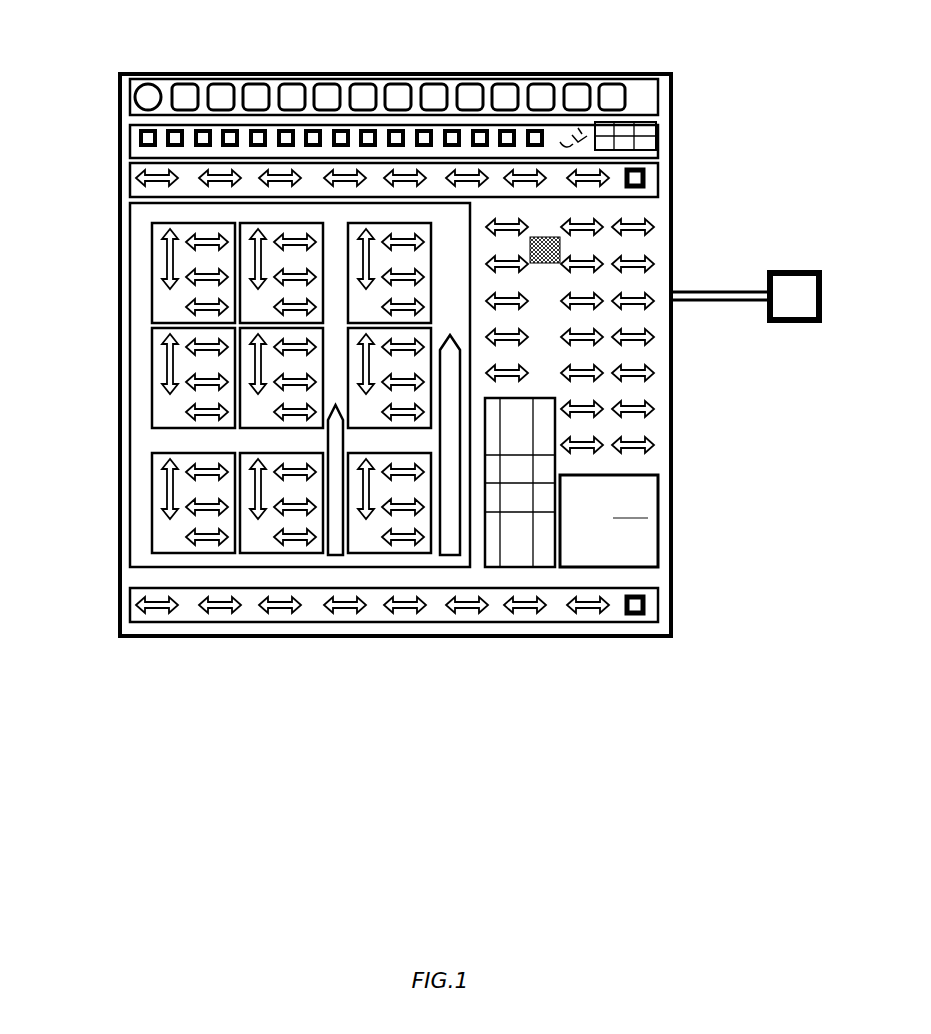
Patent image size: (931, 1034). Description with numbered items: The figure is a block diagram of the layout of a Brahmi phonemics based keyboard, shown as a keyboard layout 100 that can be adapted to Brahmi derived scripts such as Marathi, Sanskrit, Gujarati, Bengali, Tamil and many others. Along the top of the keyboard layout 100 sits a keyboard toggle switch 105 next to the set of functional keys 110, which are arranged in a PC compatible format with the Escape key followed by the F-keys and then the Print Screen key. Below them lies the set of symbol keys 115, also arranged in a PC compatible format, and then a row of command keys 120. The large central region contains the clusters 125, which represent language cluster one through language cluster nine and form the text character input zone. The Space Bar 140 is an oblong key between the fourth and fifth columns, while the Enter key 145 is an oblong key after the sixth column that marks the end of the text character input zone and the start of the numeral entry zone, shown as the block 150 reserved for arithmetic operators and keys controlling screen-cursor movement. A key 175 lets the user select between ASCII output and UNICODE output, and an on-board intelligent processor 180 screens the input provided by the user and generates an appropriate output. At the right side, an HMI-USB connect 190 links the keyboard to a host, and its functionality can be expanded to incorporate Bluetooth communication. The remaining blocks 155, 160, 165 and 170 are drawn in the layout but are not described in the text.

The keyboard layout 100 is at (258, 72).
The keyboard toggle switch 105 is at (136, 93).
The set of functional keys 110 is at (660, 92).
The set of symbol keys 115 is at (132, 136).
The command keys 120 is at (132, 180).
The clusters 125 is at (152, 262).
The Space Bar 140 is at (328, 437).
The Enter key 145 is at (456, 389).
The block reserved for arithmetic operators and screen-cursor movement keys 150 is at (555, 470).
The processor block 155 is at (658, 537).
The row of configurable logic blocks 160 is at (658, 605).
The array of configurable logic blocks 165 is at (652, 306).
The clock management block 170 is at (657, 130).
The ASCII/UNICODE output selection key 175 is at (580, 134).
The on-board intelligent processor 180 is at (548, 238).
The HMI-USB connect 190 is at (703, 292).